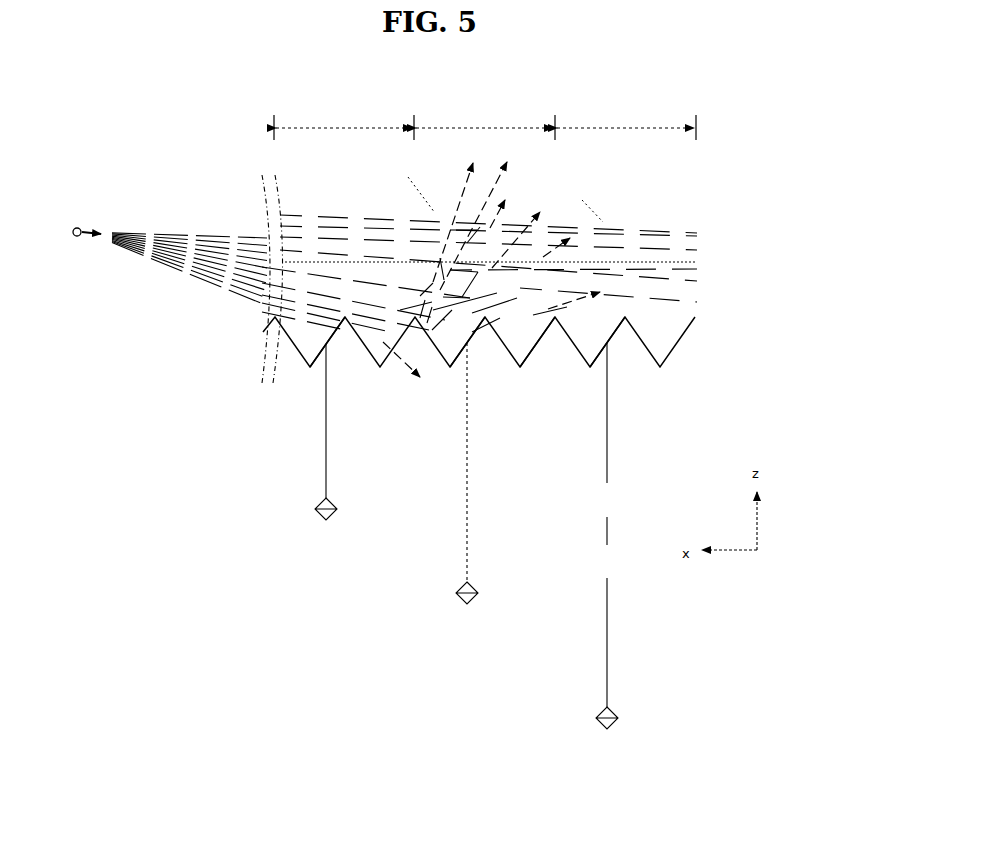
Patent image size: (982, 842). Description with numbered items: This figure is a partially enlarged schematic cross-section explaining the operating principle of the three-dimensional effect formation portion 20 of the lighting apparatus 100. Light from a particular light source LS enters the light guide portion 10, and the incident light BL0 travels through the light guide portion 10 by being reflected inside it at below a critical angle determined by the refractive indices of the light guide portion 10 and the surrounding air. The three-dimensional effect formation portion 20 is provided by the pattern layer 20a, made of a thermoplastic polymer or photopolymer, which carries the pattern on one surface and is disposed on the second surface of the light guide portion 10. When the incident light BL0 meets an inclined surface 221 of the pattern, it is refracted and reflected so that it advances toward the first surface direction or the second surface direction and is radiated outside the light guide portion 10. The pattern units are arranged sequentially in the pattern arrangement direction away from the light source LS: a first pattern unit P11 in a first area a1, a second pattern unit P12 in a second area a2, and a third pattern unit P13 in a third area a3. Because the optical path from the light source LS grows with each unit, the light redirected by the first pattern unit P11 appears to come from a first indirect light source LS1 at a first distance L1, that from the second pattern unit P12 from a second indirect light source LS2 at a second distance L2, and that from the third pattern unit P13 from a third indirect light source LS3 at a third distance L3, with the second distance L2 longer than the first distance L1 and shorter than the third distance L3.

The lighting apparatus 100 is at (726, 152).
The light guide portion 10 is at (690, 183).
The three-dimensional effect formation portion 20 is at (692, 332).
The pattern layer 20a is at (688, 271).
The inclined surface 221 is at (533, 348).
The first pattern unit P11 is at (327, 343).
The second pattern unit P12 is at (467, 343).
The third pattern unit P13 is at (607, 347).
The first distance L1 is at (326, 463).
The second distance L2 is at (467, 503).
The third distance L3 is at (607, 583).
The light source LS is at (84, 219).
The first indirect light source LS1 is at (321, 515).
The second indirect light source LS2 is at (462, 598).
The third indirect light source LS3 is at (602, 723).
The incident light BL0 is at (229, 282).
The first area a1 is at (344, 124).
The second area a2 is at (485, 124).
The third area a3 is at (626, 124).